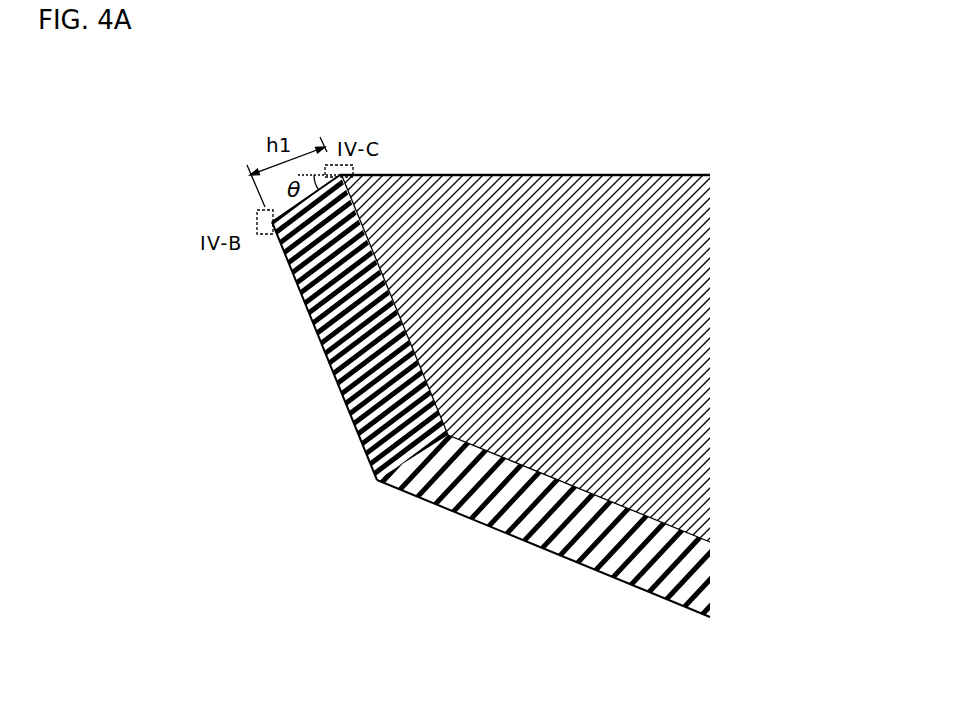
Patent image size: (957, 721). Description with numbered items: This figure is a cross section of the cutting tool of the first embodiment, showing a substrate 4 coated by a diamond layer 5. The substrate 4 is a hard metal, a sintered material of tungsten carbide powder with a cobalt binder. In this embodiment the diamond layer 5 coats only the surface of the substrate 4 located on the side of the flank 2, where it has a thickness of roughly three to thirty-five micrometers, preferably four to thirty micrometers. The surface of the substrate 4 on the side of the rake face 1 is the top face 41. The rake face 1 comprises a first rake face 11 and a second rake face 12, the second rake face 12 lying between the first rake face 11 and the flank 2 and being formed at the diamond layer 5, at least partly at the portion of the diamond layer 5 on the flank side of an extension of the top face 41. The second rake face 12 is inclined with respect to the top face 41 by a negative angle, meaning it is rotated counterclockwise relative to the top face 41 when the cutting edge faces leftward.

The rake face 1 is at (493, 75).
The flank 2 is at (313, 325).
The substrate 4 is at (692, 314).
The diamond layer 5 is at (697, 578).
The first rake face 11 is at (491, 173).
The top face 41 is at (525, 134).
The second rake face 12 is at (384, 173).